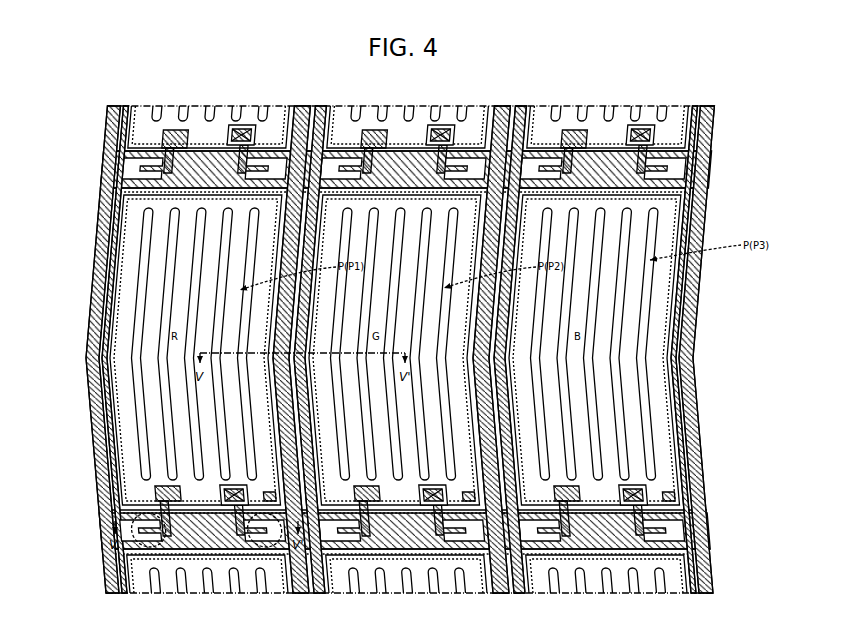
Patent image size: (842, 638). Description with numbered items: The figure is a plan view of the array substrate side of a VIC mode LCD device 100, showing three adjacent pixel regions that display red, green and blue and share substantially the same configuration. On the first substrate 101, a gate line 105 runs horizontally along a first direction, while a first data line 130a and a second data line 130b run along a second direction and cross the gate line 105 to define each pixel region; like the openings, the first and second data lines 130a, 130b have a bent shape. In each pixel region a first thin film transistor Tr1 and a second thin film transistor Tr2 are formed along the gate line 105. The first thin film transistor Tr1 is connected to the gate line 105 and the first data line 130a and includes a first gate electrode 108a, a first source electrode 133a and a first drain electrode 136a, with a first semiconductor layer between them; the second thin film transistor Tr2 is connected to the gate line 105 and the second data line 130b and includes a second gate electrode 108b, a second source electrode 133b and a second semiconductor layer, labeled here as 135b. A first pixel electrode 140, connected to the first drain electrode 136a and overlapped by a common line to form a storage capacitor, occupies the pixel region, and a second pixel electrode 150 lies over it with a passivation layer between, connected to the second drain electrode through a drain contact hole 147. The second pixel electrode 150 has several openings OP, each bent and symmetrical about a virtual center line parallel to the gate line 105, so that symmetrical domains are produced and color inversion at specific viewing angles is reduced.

The LCD device 100 is at (289, 96).
The first substrate 101 is at (556, 96).
The gate line 105 is at (216, 540).
The first gate electrode 108a is at (154, 494).
The second gate electrode 108b is at (277, 496).
The first data line 130a is at (98, 268).
The second data line 130b is at (264, 306).
The first source electrode 133a is at (131, 537).
The second source electrode 133b is at (264, 537).
The second semiconductor layer 135b is at (237, 530).
The first drain electrode 136a is at (160, 530).
The first pixel electrode 140 is at (103, 214).
The drain contact hole 147 is at (226, 475).
The second pixel electrode 150 is at (108, 250).
The opening OP is at (242, 251).
The first thin film transistor Tr1 is at (164, 530).
The second thin film transistor Tr2 is at (249, 530).